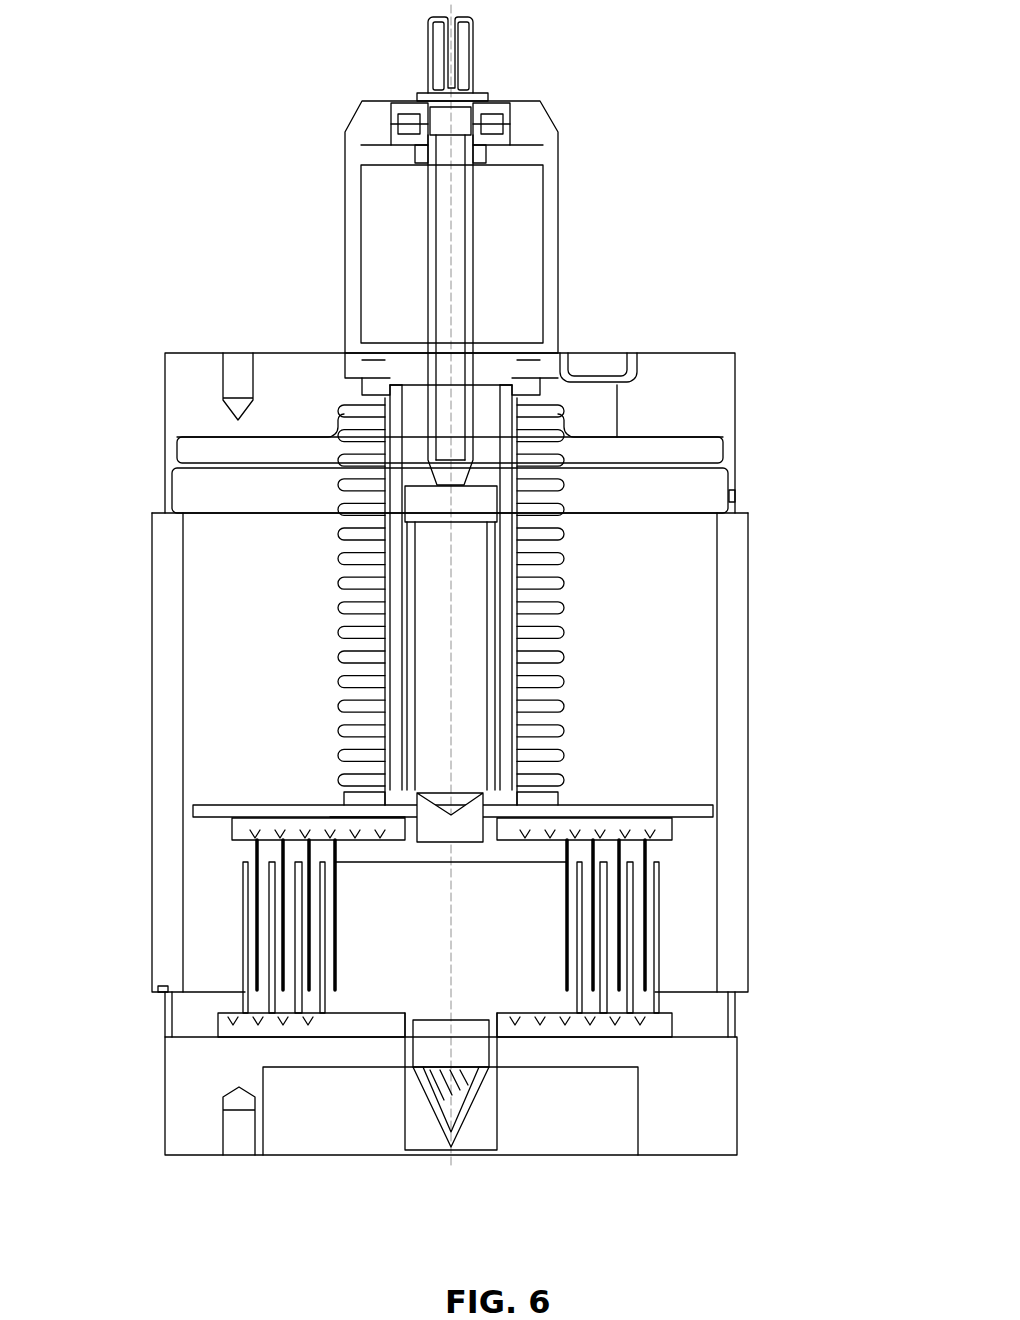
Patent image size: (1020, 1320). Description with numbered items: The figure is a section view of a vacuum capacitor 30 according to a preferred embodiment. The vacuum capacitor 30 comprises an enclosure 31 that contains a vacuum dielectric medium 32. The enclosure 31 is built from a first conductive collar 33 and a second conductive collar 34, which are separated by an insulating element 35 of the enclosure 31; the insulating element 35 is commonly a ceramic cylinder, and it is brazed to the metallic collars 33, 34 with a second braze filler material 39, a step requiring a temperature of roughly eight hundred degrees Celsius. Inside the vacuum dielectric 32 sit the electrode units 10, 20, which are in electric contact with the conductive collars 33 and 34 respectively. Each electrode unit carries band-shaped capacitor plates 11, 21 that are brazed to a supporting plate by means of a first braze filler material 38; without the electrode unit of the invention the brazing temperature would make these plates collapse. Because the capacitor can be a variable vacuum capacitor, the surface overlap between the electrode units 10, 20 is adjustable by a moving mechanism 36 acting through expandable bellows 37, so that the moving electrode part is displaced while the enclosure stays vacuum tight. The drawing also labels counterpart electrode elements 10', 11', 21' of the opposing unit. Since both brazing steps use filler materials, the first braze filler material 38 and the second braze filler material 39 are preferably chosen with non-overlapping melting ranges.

The vacuum capacitor 30 is at (648, 122).
The enclosure 31 is at (751, 352).
The vacuum dielectric medium 32 is at (680, 635).
The first conductive collar 33 is at (725, 400).
The second conductive collar 34 is at (722, 1090).
The insulating element 35 is at (735, 655).
The moving mechanism 36 is at (455, 240).
The expandable bellows 37 is at (560, 458).
The first braze filler material 38 is at (283, 843).
The second braze filler material 39 is at (745, 495).
The electrode unit 10 is at (555, 1043).
The electrode unit 20 is at (588, 1025).
The band-shaped capacitor plate 11 is at (566, 940).
The band-shaped capacitor plate 21 is at (618, 937).
The first counter electrode 10' is at (536, 788).
The first counter electrode fingers 11' is at (560, 904).
The second counter electrode fingers 21' is at (584, 904).